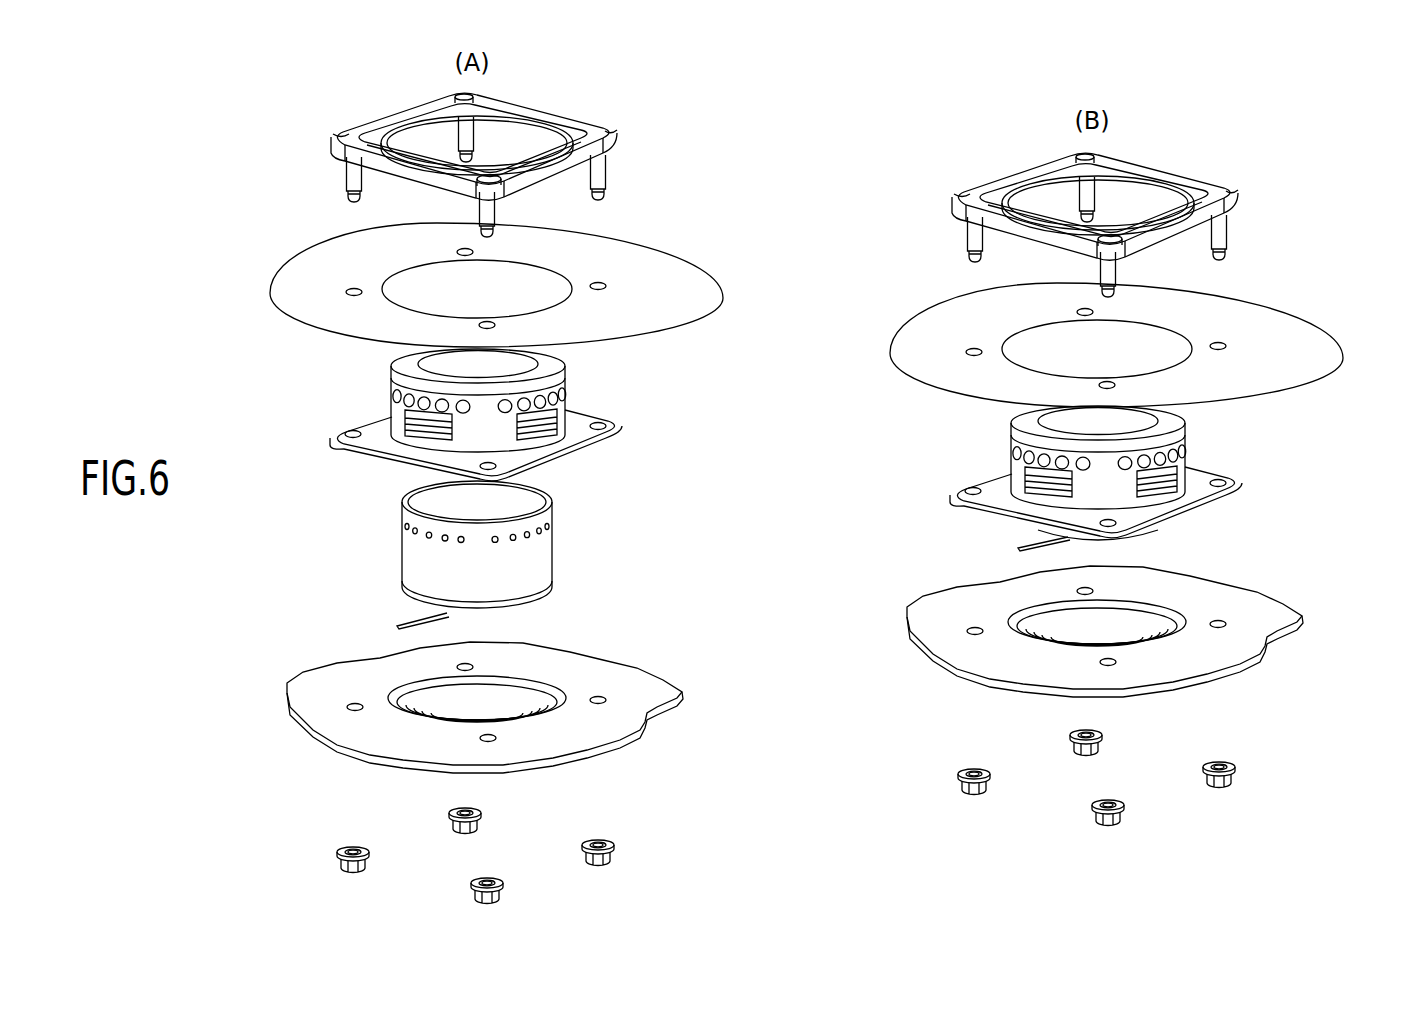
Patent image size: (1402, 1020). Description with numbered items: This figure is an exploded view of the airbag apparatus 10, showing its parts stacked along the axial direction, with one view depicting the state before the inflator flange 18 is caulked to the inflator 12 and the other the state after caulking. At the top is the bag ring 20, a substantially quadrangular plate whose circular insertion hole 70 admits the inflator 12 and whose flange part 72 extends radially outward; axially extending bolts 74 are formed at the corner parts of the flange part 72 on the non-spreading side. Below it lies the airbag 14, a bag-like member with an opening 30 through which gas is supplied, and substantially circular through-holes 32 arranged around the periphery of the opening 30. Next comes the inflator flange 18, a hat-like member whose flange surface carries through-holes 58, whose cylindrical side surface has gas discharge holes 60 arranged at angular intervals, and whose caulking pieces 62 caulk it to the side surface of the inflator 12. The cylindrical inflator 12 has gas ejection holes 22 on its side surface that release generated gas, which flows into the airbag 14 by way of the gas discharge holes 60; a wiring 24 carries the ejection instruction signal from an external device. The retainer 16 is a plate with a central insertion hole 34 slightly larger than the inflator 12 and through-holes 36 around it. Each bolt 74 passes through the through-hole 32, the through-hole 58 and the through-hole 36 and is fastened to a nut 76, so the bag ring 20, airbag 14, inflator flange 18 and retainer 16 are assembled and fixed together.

The airbag apparatus 10 is at (256, 380).
The inflator 12 is at (553, 563).
The airbag 14 is at (680, 327).
The retainer 16 is at (616, 660).
The inflator flange 18 is at (588, 448).
The bag ring 20 is at (618, 150).
The gas ejection holes 22 is at (403, 533).
The wiring 24 is at (405, 616).
The opening 30 is at (522, 282).
The through-holes 32 is at (606, 287).
The insertion hole 34 is at (488, 695).
The through-holes 36 is at (353, 712).
The through-holes 58 is at (348, 429).
The gas discharge holes 60 is at (422, 402).
The caulking pieces 62 is at (422, 432).
The insertion hole 70 is at (512, 140).
The flange part 72 is at (377, 138).
The bolts 74 is at (346, 181).
The nut 76 is at (370, 855).